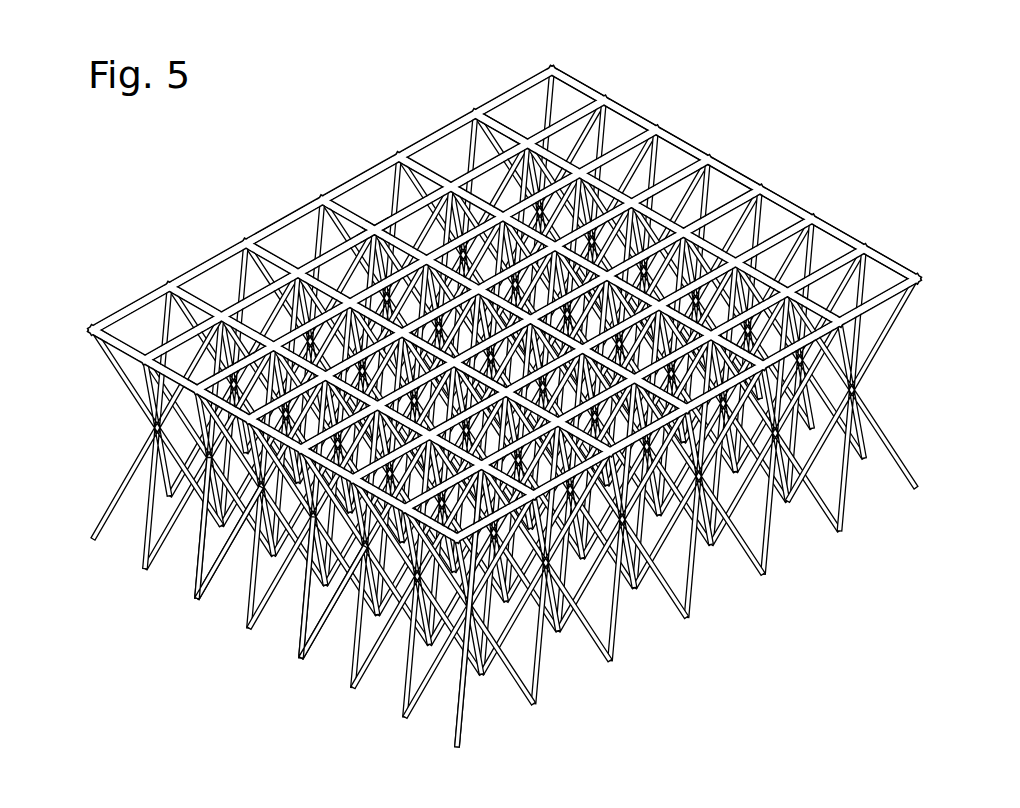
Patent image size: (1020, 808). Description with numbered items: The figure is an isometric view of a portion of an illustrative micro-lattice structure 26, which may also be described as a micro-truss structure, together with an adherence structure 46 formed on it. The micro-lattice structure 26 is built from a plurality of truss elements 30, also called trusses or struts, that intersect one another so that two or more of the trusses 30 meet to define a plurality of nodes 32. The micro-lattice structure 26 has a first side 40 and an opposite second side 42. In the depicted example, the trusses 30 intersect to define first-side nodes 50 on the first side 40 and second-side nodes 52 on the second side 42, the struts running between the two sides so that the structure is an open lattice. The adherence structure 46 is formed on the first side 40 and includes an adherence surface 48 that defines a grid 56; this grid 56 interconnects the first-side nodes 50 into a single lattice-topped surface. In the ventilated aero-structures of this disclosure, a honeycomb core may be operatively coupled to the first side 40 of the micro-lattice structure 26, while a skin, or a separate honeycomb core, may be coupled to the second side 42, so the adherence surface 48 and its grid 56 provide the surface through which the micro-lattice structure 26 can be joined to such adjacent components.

The micro-lattice structure 26 is at (728, 107).
The truss elements 30 is at (127, 424).
The nodes 32 is at (873, 390).
The first side 40 is at (502, 294).
The second side 42 is at (491, 724).
The adherence structure 46 is at (767, 175).
The adherence surface 48 is at (361, 219).
The first-side nodes 50 is at (187, 397).
The second-side nodes 52 is at (198, 604).
The grid 56 is at (503, 128).